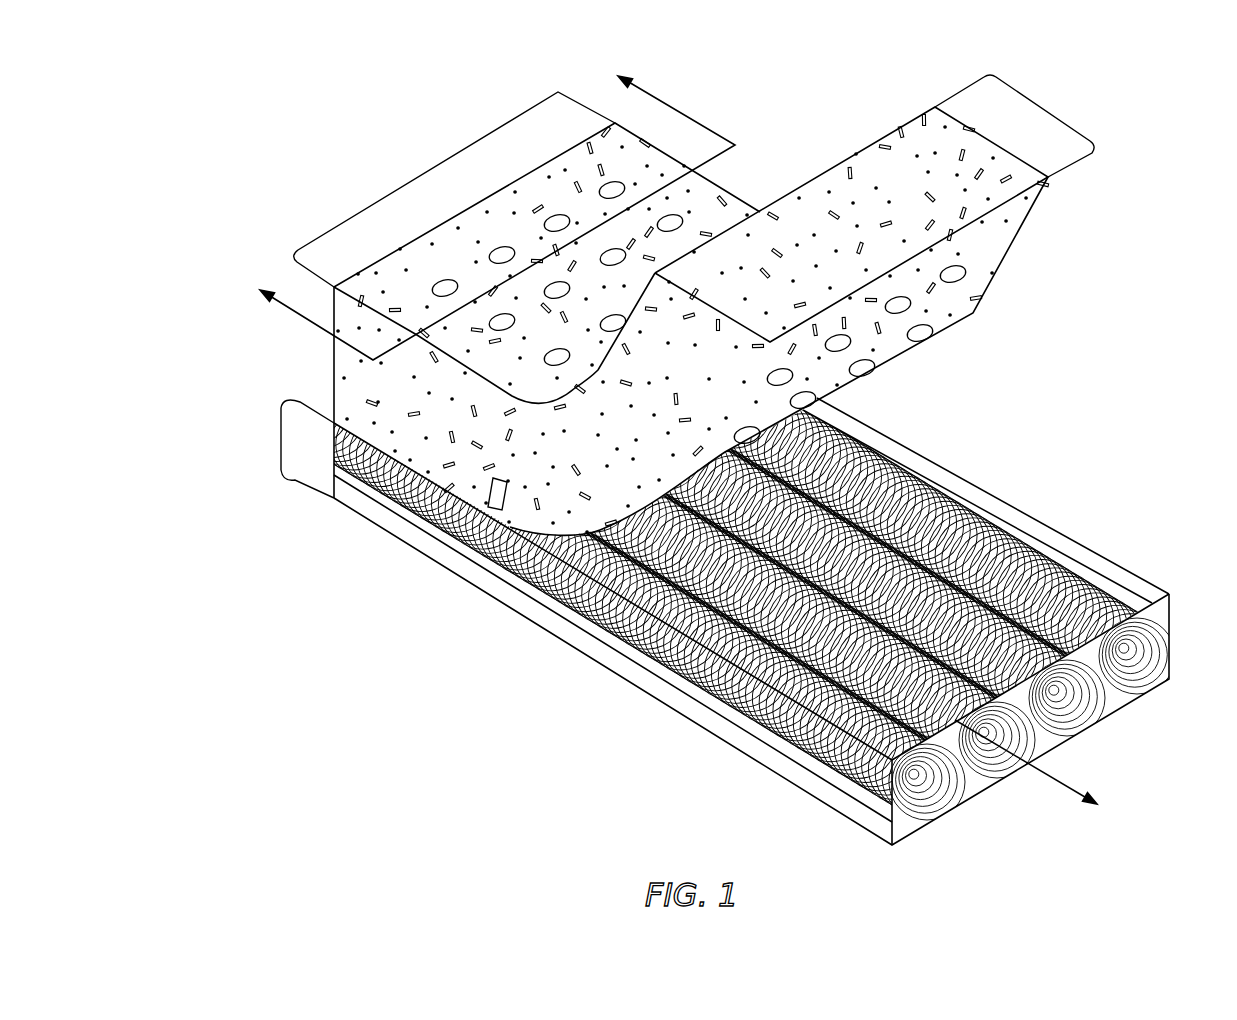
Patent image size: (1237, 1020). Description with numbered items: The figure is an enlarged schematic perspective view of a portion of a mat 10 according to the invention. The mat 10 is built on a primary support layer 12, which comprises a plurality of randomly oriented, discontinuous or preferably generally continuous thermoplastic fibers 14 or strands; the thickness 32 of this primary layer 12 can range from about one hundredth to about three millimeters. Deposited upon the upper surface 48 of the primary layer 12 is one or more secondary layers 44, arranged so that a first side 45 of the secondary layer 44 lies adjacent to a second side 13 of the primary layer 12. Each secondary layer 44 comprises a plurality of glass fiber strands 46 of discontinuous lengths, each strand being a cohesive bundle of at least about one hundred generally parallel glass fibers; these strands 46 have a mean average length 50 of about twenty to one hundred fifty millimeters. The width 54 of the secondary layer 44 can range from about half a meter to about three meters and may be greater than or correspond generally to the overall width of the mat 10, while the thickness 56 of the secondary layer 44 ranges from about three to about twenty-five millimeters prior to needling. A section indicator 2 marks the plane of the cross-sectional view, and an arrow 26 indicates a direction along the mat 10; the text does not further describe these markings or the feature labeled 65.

The mat 10 is at (1072, 347).
The primary support layer 12 is at (640, 702).
The second side of the primary layer 13 is at (1013, 523).
The thermoplastic fibers 14 is at (1170, 598).
The section line 2- 2 is at (489, 207).
The longitudinal direction arrow 26 is at (1057, 775).
The thickness of the primary layer 32 is at (281, 438).
The secondary layer 44 is at (975, 315).
The first side of the secondary layer 45 is at (1013, 226).
The fiber strands 46 is at (366, 400).
The upper surface of the primary layer 48 is at (1072, 548).
The mean average length 50 is at (495, 512).
The width of the secondary layer 54 is at (430, 169).
The thickness of the secondary layer 56 is at (1048, 114).
The tubes 65 is at (966, 276).